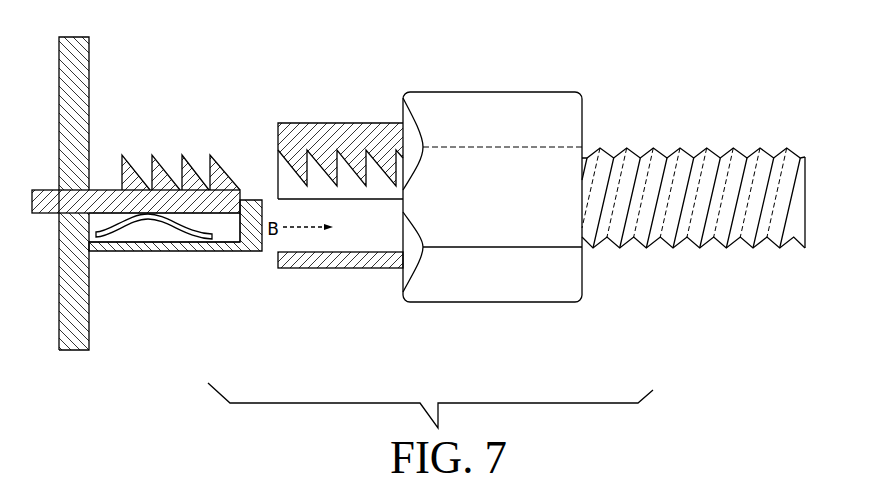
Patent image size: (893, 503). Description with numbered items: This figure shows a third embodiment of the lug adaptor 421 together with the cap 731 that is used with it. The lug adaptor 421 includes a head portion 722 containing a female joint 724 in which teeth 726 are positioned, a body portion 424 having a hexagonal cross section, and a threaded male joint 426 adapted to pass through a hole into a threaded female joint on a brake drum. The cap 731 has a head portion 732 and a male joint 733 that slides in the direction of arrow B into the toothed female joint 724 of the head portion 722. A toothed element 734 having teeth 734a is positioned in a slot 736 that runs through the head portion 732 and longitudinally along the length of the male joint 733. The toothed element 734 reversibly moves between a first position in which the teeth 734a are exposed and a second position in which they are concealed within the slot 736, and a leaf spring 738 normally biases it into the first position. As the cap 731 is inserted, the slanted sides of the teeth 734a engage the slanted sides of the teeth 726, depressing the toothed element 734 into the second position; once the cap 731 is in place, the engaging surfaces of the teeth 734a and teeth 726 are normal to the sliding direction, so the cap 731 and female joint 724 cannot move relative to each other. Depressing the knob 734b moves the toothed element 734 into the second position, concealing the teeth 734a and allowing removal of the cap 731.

The cap 731 is at (191, 77).
The head portion 732 is at (59, 87).
The toothed element 734 is at (100, 189).
The teeth 734a is at (210, 171).
The knob 734b is at (45, 203).
The male joint 733 is at (243, 253).
The slot 736 is at (213, 224).
The leaf spring 738 is at (142, 226).
The head portion 722 is at (342, 123).
The teeth 726 is at (303, 168).
The female joint 724 is at (352, 231).
The lug adaptor 421 is at (616, 69).
The body portion 424 is at (502, 98).
The threaded male joint 426 is at (697, 160).